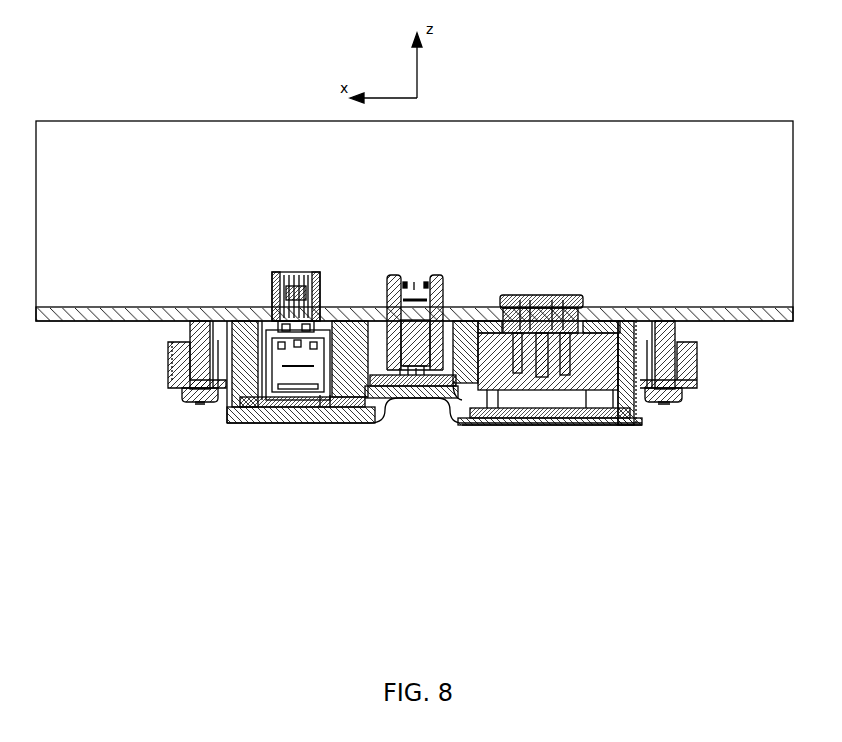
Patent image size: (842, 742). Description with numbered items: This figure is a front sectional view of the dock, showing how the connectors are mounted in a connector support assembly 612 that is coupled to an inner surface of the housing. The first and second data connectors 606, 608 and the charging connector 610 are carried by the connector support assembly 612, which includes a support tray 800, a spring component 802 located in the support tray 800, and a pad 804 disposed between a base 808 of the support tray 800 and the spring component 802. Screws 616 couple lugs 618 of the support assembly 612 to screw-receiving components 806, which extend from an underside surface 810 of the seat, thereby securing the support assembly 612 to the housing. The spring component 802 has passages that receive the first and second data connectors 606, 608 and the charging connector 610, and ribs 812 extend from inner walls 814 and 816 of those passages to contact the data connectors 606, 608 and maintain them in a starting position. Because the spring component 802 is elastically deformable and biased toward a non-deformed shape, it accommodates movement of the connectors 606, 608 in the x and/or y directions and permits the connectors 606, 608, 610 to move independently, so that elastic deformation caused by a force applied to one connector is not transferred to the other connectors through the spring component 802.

The support tray 800 is at (562, 424).
The spring component 802 is at (247, 327).
The pad 804 is at (473, 422).
The screw-receiving components 806 is at (190, 332).
The base 808 is at (268, 425).
The underside surface 810 is at (757, 322).
The ribs 812 is at (253, 408).
The inner wall 814 is at (322, 408).
The inner wall 816 is at (455, 388).
The first data connector 606 is at (297, 293).
The second data connector 608 is at (412, 282).
The charging connector 610 is at (553, 298).
The connector support assembly 612 is at (626, 412).
The screws 616 is at (672, 400).
The lugs 618 is at (177, 381).